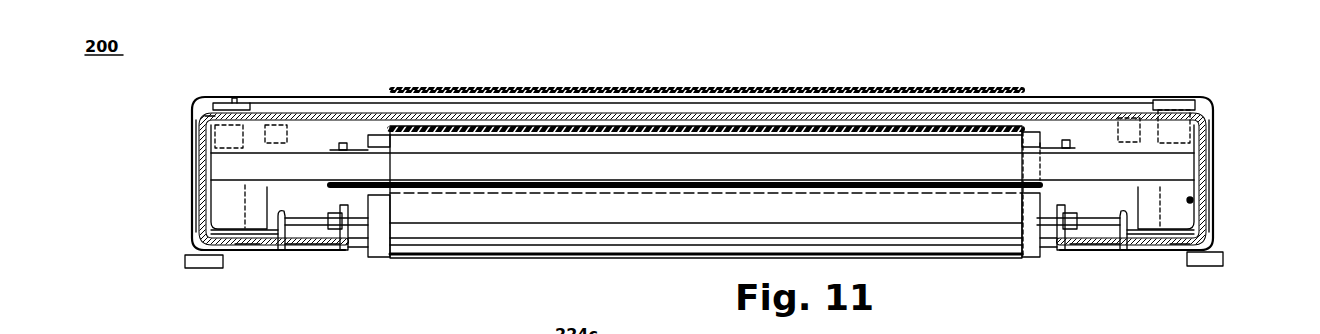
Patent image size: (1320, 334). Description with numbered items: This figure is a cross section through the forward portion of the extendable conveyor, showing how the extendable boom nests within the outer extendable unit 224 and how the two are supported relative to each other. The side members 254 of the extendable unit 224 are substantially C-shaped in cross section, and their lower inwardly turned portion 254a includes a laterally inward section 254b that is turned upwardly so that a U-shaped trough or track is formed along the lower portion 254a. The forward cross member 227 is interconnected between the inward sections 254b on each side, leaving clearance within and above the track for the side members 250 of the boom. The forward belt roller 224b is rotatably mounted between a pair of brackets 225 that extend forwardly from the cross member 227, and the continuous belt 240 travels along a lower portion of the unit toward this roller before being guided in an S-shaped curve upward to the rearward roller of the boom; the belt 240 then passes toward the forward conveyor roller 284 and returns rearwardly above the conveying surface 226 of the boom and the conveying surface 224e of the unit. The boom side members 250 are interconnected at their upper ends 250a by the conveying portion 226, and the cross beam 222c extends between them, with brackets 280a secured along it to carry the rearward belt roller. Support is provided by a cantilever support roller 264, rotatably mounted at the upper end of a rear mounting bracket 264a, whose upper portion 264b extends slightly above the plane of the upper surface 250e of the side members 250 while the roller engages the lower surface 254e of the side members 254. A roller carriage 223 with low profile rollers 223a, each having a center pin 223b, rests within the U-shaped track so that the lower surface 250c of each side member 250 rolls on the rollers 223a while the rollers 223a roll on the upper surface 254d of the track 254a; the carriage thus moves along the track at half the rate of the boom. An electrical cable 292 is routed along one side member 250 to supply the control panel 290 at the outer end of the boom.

The cross beam 222c is at (1172, 165).
The roller carriage 223 is at (272, 248).
The low profile rollers 223a is at (235, 253).
The center pin 223b is at (213, 235).
The outer extendable unit 224 is at (191, 128).
The forward belt roller 224b is at (388, 257).
The conveying surface 224e is at (298, 96).
The brackets 225 is at (348, 250).
The conveying surface 226 is at (325, 114).
The forward cross member 227 is at (300, 230).
The continuous belt 240 is at (625, 86).
The side members 250 is at (1203, 130).
The upper ends 250a is at (212, 135).
The lower surface 250c is at (188, 263).
The upper surface 250e is at (234, 98).
The side members 254 is at (203, 190).
The lower inwardly turned portion 254a is at (250, 248).
The laterally inward section 254b is at (284, 242).
The upper surface of track 254d is at (258, 225).
The lower surface / outer end of side members 254e is at (197, 124).
The cantilever support roller 264 is at (1192, 107).
The rear mounting bracket 264a is at (1153, 128).
The upper portion of cantilever support roller 264b is at (231, 103).
The brackets 280a is at (342, 146).
The forward conveyor roller 284 is at (1133, 326).
The control panel 290 is at (1208, 326).
The electrical cable 292 is at (1196, 200).